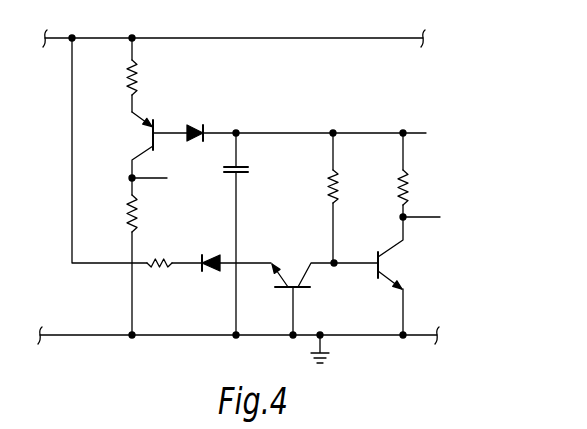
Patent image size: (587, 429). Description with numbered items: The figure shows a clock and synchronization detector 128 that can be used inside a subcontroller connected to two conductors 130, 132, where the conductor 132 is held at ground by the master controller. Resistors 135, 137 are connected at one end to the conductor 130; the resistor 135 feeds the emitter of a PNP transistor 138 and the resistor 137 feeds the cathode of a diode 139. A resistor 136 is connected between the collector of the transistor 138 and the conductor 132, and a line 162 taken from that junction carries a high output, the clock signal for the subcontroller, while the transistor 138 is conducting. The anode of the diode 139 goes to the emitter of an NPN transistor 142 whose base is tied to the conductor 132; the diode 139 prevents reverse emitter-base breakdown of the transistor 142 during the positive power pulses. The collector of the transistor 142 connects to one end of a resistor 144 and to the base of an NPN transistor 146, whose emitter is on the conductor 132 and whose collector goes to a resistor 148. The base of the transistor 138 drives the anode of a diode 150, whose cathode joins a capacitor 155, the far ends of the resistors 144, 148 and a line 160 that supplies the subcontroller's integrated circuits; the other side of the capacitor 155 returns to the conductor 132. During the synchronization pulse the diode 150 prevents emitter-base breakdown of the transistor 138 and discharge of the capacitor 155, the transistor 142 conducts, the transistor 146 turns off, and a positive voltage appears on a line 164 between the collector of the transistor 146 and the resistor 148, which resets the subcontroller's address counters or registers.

The clock and synchronization detector 128 is at (389, 351).
The conductor 130 is at (262, 40).
The conductor 132 is at (268, 337).
The resistor 135 is at (139, 82).
The resistor 136 is at (139, 212).
The resistor 137 is at (150, 265).
The PNP transistor 138 is at (149, 146).
The diode 139 is at (212, 272).
The NPN transistor 142 is at (306, 288).
The resistor 144 is at (339, 189).
The NPN transistor 146 is at (383, 264).
The resistor 148 is at (409, 189).
The diode 150 is at (196, 124).
The capacitor 155 is at (249, 167).
The line 160 is at (414, 127).
The line 162 is at (150, 179).
The line 164 is at (442, 219).